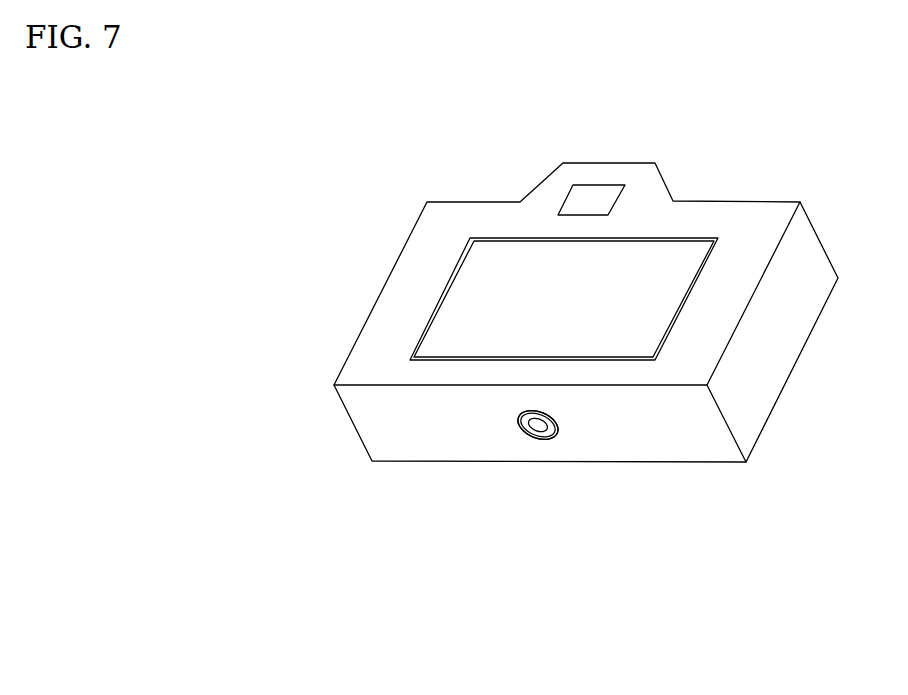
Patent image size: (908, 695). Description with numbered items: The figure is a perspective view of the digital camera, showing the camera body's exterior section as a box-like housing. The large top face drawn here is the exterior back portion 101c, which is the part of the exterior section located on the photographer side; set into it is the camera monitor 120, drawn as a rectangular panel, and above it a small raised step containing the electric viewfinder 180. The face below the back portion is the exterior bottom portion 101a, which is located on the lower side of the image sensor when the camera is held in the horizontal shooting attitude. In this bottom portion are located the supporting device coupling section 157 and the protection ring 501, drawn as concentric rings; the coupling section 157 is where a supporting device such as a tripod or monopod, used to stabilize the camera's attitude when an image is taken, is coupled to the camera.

The exterior back portion 101c is at (417, 235).
The exterior bottom portion 101a is at (403, 423).
The camera monitor 120 is at (652, 283).
The electric viewfinder 180 is at (605, 199).
The supporting device coupling section 157 is at (530, 435).
The protection ring 501 is at (553, 435).